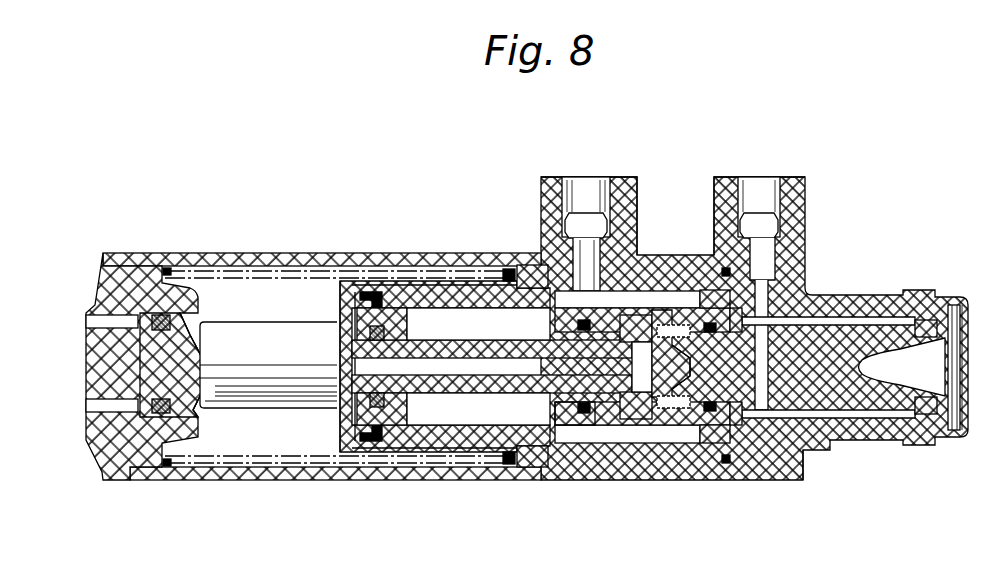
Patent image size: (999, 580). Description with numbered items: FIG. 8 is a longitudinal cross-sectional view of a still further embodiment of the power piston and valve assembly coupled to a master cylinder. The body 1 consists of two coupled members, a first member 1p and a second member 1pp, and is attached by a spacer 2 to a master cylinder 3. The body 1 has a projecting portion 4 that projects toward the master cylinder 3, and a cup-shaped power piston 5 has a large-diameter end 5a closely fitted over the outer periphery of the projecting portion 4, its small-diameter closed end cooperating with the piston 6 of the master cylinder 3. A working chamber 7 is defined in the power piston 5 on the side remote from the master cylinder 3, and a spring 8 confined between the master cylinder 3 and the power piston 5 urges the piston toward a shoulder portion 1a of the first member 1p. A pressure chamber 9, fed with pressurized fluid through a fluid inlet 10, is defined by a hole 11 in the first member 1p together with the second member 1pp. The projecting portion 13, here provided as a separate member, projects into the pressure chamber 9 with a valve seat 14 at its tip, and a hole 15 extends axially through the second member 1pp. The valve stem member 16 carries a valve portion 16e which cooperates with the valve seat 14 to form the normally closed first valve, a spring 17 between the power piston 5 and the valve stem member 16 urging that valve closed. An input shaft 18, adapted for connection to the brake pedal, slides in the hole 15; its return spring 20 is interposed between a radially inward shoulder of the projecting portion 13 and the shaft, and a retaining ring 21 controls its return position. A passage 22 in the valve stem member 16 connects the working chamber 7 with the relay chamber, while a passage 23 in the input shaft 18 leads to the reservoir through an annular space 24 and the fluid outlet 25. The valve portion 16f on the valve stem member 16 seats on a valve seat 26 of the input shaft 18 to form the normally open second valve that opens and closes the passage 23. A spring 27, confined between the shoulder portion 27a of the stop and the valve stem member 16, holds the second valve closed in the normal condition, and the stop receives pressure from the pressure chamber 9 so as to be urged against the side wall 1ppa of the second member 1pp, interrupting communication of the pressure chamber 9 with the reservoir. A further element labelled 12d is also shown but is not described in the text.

The body proper 1 is at (805, 164).
The shoulder portion 1a is at (524, 266).
The coupled member 1p is at (553, 195).
The coupled member 1pp is at (722, 195).
The side wall 1ppa is at (757, 430).
The spacer 2 is at (262, 262).
The master cylinder 3 is at (113, 264).
The projecting portion 4 is at (421, 270).
The power piston 5 is at (420, 302).
The large diameter end 5a is at (345, 309).
The piston 6 is at (190, 392).
The working chamber 7 is at (352, 292).
The spring 8 is at (188, 275).
The pressure chamber 9 is at (477, 317).
The fluid inlet 10 is at (575, 192).
The hole 11 is at (466, 440).
The passage 12d is at (762, 300).
The projecting portion 13 is at (648, 400).
The valve seat 14 is at (562, 394).
The hole 15 is at (788, 300).
The valve stem member 16 is at (456, 386).
The valve portion 16e is at (598, 448).
The valve portion 16f is at (648, 446).
The spring 17 is at (606, 328).
The input shaft 18 is at (893, 330).
The return spring 20 is at (690, 410).
The retaining ring 21 is at (655, 298).
The passage 22 is at (505, 370).
The passage 23 is at (738, 432).
The annular space 24 is at (863, 325).
The fluid outlet 25 is at (757, 192).
The valve seat 26 is at (668, 420).
The spring 27 is at (628, 325).
The shoulder portion 27a is at (567, 425).